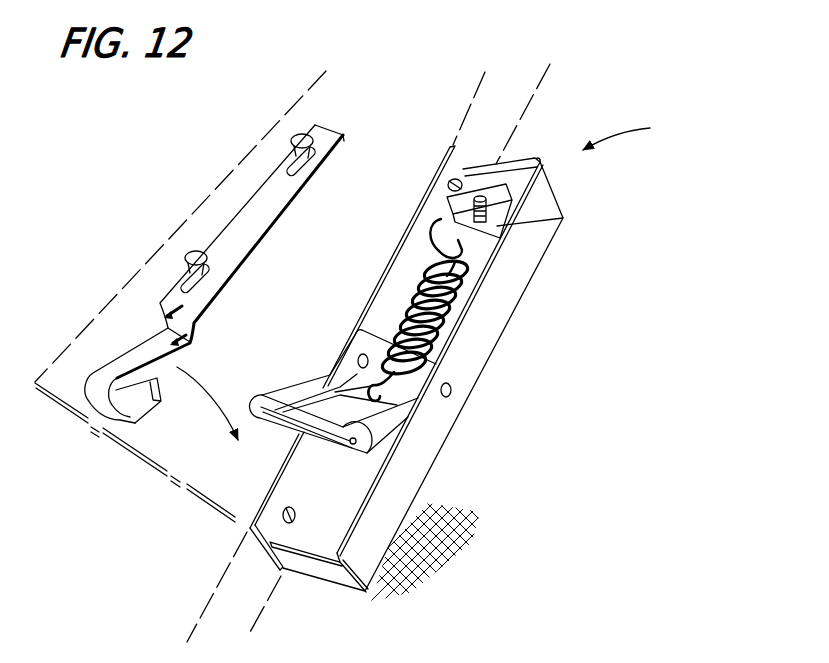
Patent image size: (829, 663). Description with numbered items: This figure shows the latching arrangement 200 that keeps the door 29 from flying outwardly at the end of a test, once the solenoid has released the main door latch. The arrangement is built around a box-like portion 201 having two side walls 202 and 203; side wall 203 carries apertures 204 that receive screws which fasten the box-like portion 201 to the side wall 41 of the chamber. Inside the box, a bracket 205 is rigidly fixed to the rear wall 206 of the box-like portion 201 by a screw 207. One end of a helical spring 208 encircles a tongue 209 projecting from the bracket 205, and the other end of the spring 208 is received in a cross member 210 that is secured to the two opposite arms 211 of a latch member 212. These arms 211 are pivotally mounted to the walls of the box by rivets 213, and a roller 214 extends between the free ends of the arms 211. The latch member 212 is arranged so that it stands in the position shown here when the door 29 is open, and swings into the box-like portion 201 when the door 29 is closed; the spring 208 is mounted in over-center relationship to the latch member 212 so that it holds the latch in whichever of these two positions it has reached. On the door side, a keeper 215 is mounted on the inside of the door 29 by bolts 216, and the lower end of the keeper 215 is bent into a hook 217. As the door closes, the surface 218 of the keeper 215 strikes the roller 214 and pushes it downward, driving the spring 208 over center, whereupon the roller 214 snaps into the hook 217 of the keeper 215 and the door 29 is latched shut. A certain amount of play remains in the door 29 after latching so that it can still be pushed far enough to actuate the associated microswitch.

The door 29 is at (196, 206).
The side wall 41 is at (454, 107).
The latching arrangement 200 is at (634, 133).
The box-like portion 201 is at (443, 452).
The side wall 202 is at (473, 352).
The side wall 203 is at (410, 247).
The aperture 204 is at (472, 198).
The bracket 205 is at (563, 218).
The rear wall 206 is at (323, 541).
The screw 207 is at (482, 193).
The helical spring 208 is at (473, 310).
The tongue 209 is at (500, 246).
The cross member 210 is at (365, 380).
The arms 211 is at (320, 386).
The latch member 212 is at (282, 392).
The rivet 213 is at (366, 355).
The roller 214 is at (279, 443).
The keeper 215 is at (260, 200).
The bolt 216 is at (302, 138).
The hook 217 is at (127, 420).
The surface 218 is at (182, 348).